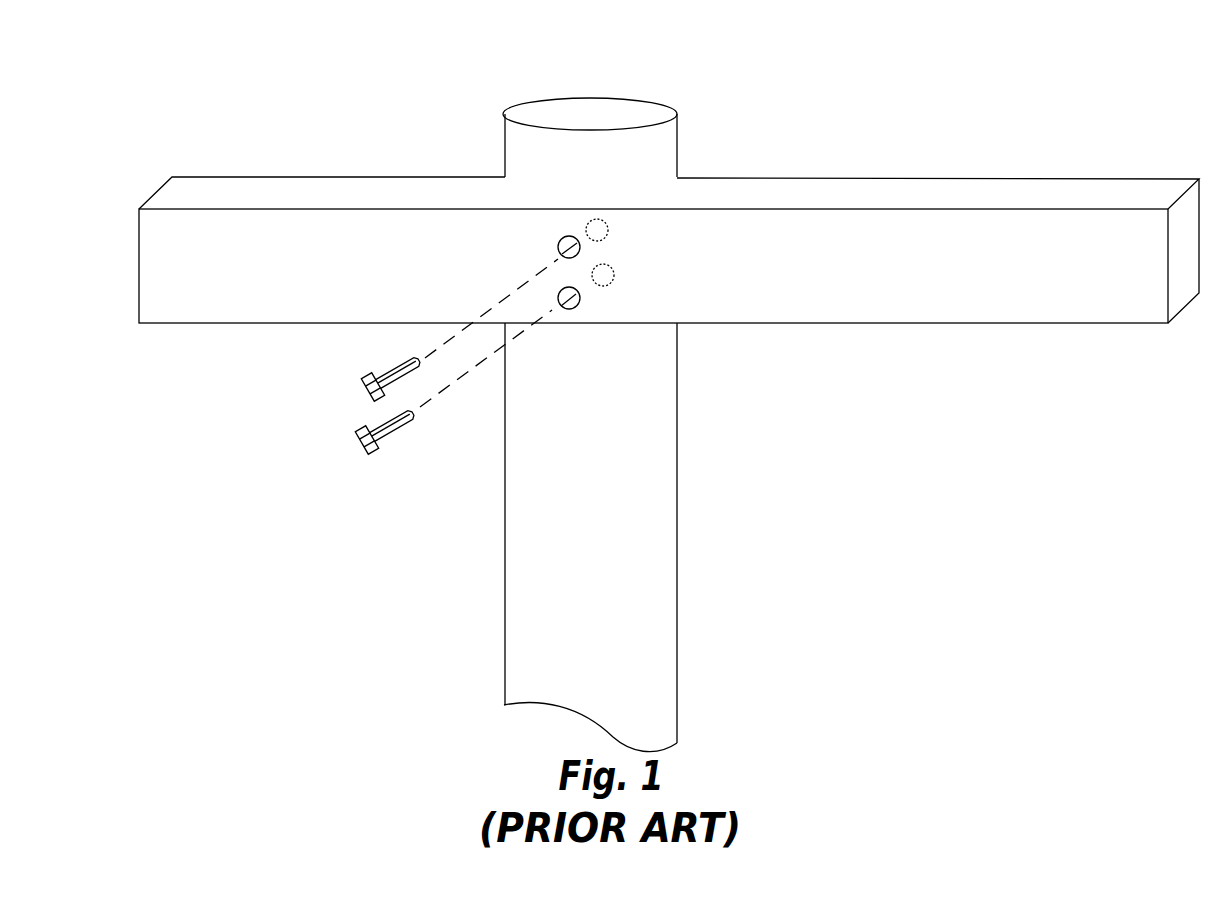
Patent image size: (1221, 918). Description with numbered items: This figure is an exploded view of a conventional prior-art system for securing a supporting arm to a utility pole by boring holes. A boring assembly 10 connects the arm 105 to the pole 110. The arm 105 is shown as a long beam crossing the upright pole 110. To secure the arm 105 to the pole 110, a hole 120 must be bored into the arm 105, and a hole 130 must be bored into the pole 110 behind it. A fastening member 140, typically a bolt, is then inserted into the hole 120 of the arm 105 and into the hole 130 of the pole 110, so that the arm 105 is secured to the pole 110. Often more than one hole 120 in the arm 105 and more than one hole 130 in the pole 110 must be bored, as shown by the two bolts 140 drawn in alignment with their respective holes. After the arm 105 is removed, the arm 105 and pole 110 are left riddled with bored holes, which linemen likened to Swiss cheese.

The boring assembly 10 is at (356, 92).
The arm 105 is at (866, 196).
The pole 110 is at (590, 98).
The hole 120 is at (580, 244).
The hole 130 is at (608, 233).
The fastening member 140 is at (370, 389).